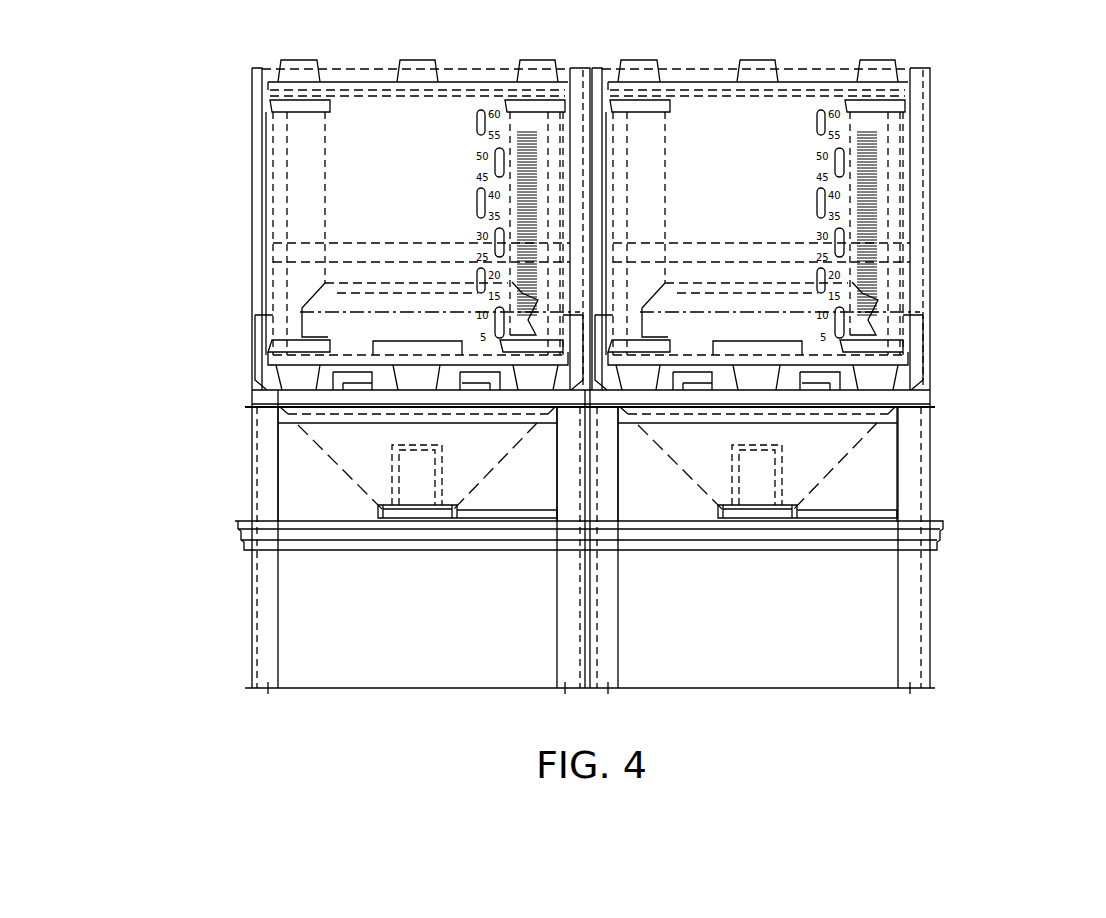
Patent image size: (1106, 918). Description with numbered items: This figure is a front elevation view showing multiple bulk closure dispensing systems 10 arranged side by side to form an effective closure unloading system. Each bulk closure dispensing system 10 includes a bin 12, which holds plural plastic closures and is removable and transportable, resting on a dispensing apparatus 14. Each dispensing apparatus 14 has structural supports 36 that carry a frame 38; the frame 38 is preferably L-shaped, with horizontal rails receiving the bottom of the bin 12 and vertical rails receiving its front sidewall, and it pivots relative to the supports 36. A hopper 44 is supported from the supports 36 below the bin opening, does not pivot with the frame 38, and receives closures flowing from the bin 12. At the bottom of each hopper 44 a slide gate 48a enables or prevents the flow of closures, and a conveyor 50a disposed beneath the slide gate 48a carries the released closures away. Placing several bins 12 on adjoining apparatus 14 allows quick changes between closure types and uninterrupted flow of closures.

The bulk closure dispensing system 10 is at (1023, 250).
The bin 12 is at (375, 115).
The dispensing apparatus 14 is at (243, 418).
The supports 36 is at (268, 608).
The frame 38 is at (913, 397).
The hopper 44 is at (836, 438).
The slide gate 48a is at (378, 510).
The conveyor 50a is at (910, 535).